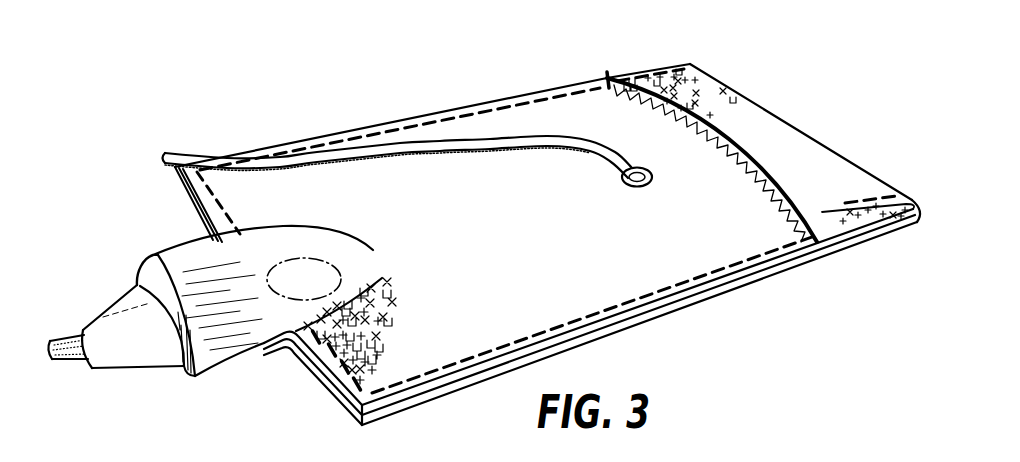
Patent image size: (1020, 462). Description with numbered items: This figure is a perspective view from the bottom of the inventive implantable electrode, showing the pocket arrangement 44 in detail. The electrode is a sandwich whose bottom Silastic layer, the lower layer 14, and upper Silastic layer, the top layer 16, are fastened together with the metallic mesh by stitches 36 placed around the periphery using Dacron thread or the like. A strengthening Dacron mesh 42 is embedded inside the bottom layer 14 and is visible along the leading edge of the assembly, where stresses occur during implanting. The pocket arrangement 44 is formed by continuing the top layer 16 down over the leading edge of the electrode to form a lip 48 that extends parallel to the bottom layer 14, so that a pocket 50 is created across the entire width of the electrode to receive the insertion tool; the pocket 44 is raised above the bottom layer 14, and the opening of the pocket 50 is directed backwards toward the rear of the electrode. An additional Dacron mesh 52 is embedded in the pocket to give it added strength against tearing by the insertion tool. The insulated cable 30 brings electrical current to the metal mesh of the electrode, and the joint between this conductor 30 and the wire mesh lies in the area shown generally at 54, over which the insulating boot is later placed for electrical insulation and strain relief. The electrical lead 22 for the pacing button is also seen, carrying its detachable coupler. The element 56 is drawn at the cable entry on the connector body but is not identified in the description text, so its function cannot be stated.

The lower layer 14 is at (342, 405).
The top layer 16 is at (397, 410).
The electrical lead 22 is at (182, 150).
The insulated cable 30 is at (59, 338).
The stitches 36 is at (432, 122).
The Dacron mesh 42 is at (418, 368).
The pocket arrangement 44 is at (600, 73).
The lip 48 is at (773, 188).
The pocket 50 is at (712, 147).
The Dacron mesh 52 is at (717, 93).
The joint area 54 is at (313, 265).
The connector body 56 is at (182, 260).